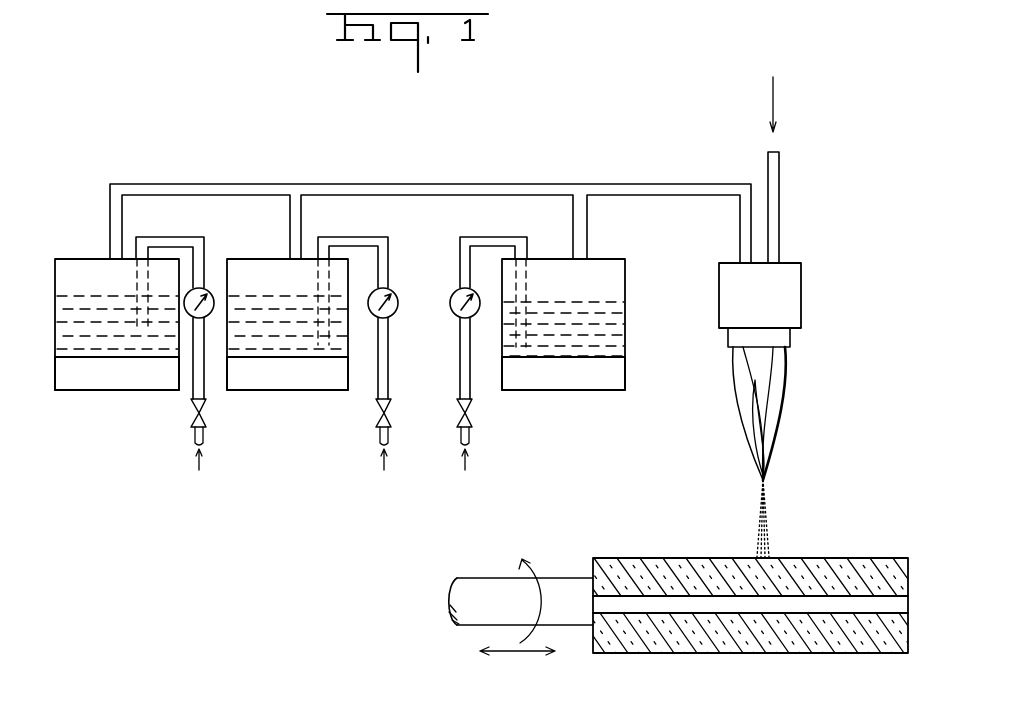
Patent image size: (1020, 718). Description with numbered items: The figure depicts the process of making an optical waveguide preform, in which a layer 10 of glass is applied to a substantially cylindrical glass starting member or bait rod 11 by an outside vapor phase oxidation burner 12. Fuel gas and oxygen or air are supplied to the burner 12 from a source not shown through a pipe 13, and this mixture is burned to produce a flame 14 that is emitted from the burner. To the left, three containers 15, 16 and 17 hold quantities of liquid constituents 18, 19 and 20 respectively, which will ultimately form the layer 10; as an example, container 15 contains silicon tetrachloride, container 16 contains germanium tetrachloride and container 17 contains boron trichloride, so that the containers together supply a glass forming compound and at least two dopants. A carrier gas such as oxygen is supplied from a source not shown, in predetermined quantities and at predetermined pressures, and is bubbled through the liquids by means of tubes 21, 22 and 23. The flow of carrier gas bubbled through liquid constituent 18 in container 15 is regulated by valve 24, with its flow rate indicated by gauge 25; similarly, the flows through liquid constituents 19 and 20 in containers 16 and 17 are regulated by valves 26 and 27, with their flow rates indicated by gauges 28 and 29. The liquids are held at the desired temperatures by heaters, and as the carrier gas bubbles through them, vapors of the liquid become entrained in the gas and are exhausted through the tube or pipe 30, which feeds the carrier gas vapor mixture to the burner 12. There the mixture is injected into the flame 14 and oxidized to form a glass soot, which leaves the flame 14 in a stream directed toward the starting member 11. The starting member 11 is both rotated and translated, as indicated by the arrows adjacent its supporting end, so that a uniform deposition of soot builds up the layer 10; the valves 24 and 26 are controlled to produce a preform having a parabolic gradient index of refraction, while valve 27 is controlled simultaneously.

The layer of glass 10 is at (853, 557).
The starting member or bait rod 11 is at (907, 605).
The outside vapor phase oxidation burner 12 is at (800, 287).
The pipe 13 is at (780, 175).
The flame 14 is at (786, 395).
The container 15 is at (625, 378).
The container 16 is at (302, 390).
The container 17 is at (147, 385).
The liquid constituent 18 is at (625, 322).
The liquid constituent 19 is at (348, 340).
The liquid constituent 20 is at (55, 325).
The tube 21 is at (487, 238).
The tube 22 is at (372, 238).
The tube 23 is at (180, 238).
The valve 24 is at (472, 410).
The gauge 25 is at (453, 312).
The valve 26 is at (390, 410).
The valve 27 is at (207, 407).
The gauge 28 is at (396, 293).
The gauge 29 is at (209, 288).
The tube or pipe 30 is at (335, 182).